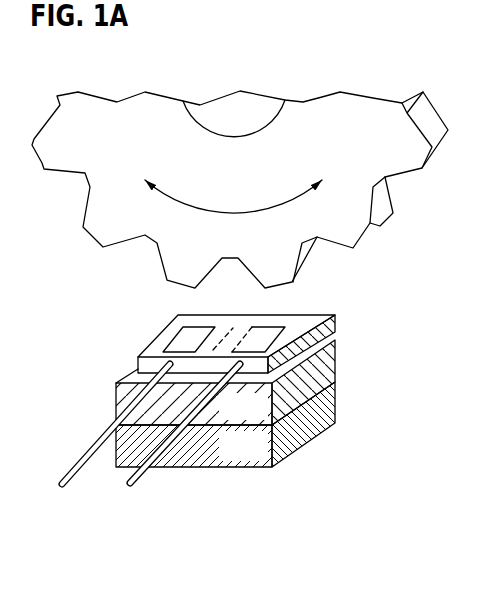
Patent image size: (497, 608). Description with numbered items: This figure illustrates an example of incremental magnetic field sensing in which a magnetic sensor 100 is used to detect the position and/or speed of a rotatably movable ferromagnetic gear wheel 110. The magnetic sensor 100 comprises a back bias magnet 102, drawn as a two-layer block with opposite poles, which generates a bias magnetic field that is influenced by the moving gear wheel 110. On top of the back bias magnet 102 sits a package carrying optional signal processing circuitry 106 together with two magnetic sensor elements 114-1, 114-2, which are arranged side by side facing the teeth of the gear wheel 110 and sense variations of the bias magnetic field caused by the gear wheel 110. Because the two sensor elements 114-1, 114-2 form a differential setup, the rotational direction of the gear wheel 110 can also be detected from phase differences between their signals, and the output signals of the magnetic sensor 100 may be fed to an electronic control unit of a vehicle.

The magnetic sensor 100 is at (219, 428).
The back bias magnet 102 is at (242, 468).
The signal processing circuitry 106 is at (219, 315).
The gear wheel 110 is at (323, 105).
The first sensor element 114-1 is at (187, 337).
The second sensor element 114-2 is at (257, 341).